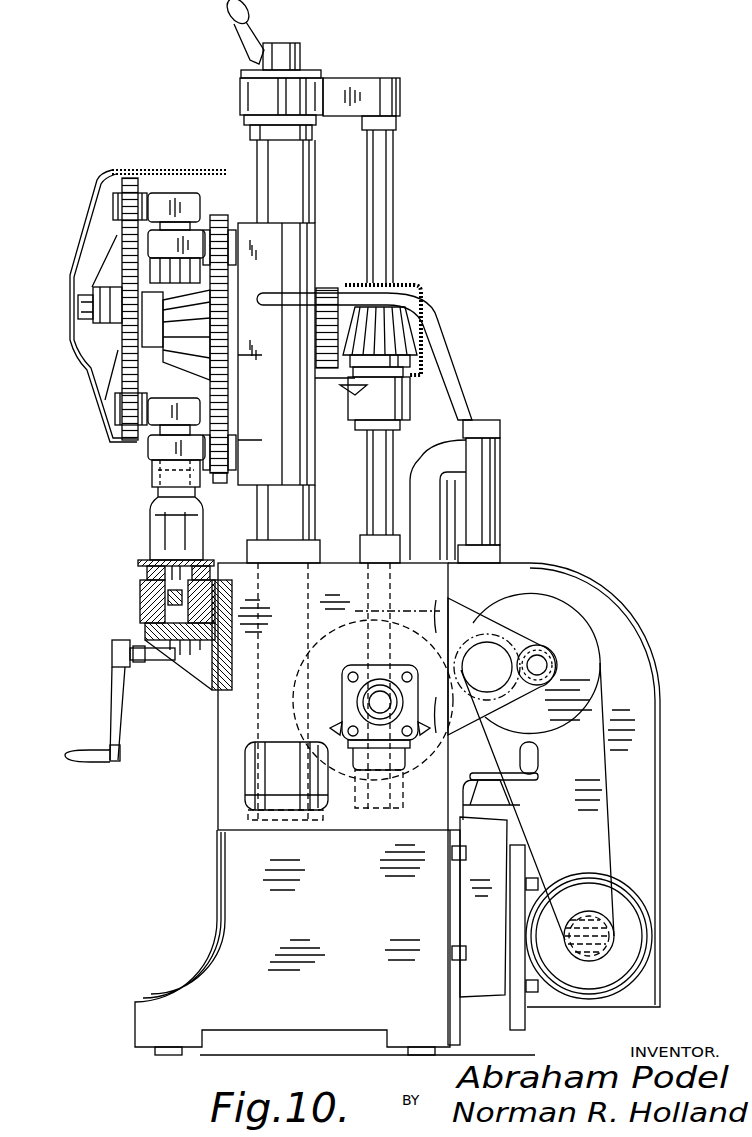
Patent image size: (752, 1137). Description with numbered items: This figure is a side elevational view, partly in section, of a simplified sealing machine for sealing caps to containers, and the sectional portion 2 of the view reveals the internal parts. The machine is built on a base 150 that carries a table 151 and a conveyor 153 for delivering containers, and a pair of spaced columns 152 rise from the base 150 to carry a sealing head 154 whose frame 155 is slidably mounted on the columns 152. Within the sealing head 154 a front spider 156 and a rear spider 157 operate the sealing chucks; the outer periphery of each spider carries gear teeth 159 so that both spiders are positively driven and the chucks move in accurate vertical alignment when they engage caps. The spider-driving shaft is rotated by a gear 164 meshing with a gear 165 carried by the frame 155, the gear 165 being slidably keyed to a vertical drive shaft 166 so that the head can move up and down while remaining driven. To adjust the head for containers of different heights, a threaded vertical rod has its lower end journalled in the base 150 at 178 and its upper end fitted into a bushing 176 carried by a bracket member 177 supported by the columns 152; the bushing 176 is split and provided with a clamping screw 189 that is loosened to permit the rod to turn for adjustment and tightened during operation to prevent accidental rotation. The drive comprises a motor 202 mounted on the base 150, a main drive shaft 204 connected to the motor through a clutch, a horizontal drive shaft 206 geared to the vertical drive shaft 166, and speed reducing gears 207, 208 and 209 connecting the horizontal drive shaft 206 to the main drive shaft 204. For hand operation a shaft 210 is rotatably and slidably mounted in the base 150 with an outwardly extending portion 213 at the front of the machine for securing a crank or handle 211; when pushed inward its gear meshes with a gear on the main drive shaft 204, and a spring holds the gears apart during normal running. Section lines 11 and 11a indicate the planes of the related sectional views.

The spindle 2 is at (157, 530).
The section line 11 is at (408, 342).
The section line 11a is at (330, 570).
The base 150 is at (215, 900).
The table 151 is at (128, 608).
The columns 152 is at (296, 195).
The conveyor 153 is at (138, 568).
The sealing head 154 is at (78, 212).
The frame 155 is at (300, 250).
The front spider 156 is at (118, 380).
The rear spider 157 is at (236, 200).
The gear teeth 159 is at (138, 430).
The gear 164 is at (375, 300).
The gear 165 is at (400, 360).
The vertical drive shaft 166 is at (393, 185).
The bushing 176 is at (312, 92).
The bracket member 177 is at (318, 98).
The journal 178 is at (245, 778).
The clamping screw 189 is at (246, 28).
The motor 202 is at (630, 905).
The main drive shaft 204 is at (548, 664).
The horizontal drive shaft 206 is at (376, 690).
The speed reducing gear 207 is at (300, 698).
The speed reducing gear 208 is at (500, 640).
The speed reducing gear 209 is at (542, 655).
The shaft 210 is at (145, 665).
The crank or handle 211 is at (112, 713).
The portion 213 is at (112, 655).